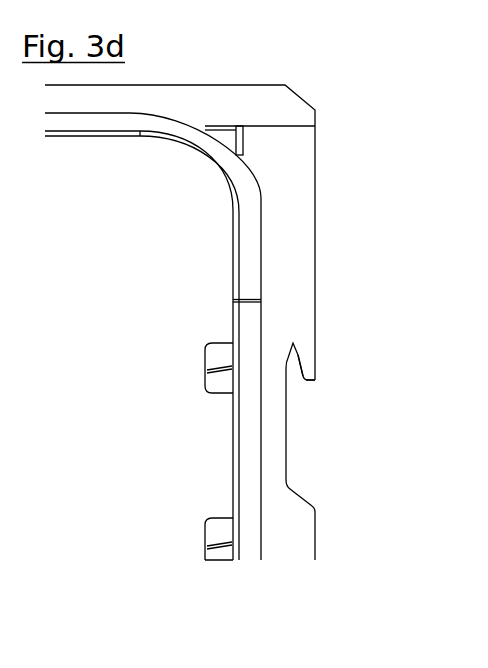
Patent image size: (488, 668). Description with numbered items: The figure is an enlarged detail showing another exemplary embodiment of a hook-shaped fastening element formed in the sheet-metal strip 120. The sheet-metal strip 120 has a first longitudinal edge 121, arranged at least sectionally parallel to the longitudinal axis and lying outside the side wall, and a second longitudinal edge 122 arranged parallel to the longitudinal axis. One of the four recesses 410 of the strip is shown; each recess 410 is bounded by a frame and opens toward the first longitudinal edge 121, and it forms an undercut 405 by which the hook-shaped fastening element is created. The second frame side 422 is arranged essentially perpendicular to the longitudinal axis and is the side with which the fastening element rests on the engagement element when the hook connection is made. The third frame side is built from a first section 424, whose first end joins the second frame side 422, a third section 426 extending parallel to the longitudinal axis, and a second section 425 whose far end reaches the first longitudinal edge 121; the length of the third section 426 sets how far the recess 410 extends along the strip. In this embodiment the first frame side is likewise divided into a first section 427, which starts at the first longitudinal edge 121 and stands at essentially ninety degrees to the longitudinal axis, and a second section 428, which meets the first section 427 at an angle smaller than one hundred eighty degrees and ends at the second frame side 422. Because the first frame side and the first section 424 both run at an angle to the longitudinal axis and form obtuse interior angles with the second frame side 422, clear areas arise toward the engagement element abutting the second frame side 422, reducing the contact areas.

The sheet-metal strip 120 is at (278, 152).
The first longitudinal edge 121 is at (315, 550).
The second longitudinal edge 122 is at (236, 127).
The second frame side 422 is at (293, 343).
The first section of the third frame side 424 is at (285, 362).
The second section of the third frame side 425 is at (297, 490).
The third section of the third frame side 426 is at (288, 421).
The first section of the first frame side 427 is at (305, 380).
The second section of the first frame side 428 is at (302, 362).
The undercut 405 is at (296, 372).
The recess 410 is at (302, 454).